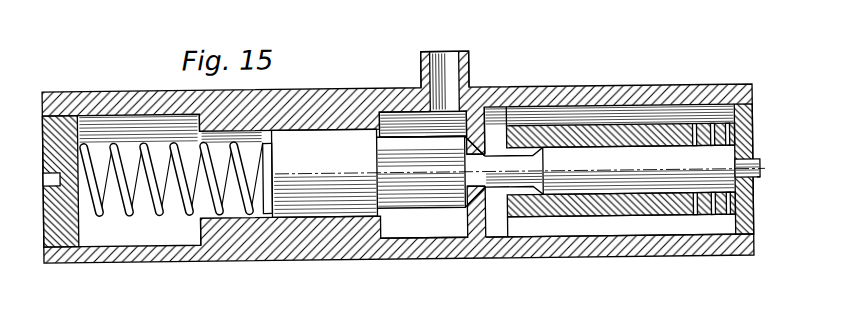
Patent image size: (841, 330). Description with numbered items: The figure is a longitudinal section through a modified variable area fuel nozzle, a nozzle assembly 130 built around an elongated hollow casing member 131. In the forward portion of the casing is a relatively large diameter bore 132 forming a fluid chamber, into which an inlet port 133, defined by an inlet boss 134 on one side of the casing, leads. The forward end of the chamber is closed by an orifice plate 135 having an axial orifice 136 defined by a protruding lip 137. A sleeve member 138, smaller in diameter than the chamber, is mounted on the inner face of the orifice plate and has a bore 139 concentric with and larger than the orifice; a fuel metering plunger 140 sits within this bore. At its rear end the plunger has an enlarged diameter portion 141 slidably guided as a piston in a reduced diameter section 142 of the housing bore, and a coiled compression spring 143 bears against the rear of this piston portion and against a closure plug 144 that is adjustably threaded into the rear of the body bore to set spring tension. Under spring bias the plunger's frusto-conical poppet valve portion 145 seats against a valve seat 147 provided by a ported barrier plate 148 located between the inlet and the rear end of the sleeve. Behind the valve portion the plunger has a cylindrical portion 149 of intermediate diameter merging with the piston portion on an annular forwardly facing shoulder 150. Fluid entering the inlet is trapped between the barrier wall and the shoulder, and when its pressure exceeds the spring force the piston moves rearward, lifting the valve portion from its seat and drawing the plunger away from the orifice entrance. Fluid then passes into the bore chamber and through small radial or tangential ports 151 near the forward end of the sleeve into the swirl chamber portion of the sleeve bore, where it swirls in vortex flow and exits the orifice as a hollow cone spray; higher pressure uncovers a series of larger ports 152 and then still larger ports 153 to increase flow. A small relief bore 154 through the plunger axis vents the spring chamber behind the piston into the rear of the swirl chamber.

The nozzle assembly 130 is at (517, 72).
The casing member 131 is at (548, 95).
The bore 132 is at (529, 238).
The inlet port 133 is at (450, 63).
The inlet boss 134 is at (470, 72).
The orifice plate 135 is at (748, 128).
The orifice 136 is at (760, 170).
The protruding lip 137 is at (757, 182).
The sleeve member 138 is at (627, 204).
The bore 139 is at (611, 146).
The plunger 140 is at (646, 153).
The enlarged diameter portion 141 is at (303, 140).
The reduced diameter section 142 is at (255, 214).
The coiled compression spring 143 is at (161, 208).
The closure plug 144 is at (62, 228).
The poppet valve portion 145 is at (468, 148).
The valve seat 147 is at (463, 233).
The ported barrier plate 148 is at (503, 240).
The cylindrical portion 149 is at (404, 140).
The shoulder 150 is at (388, 140).
The ports 151 is at (728, 212).
The ports 152 is at (713, 212).
The ports 153 is at (695, 210).
The relief bore 154 is at (408, 180).